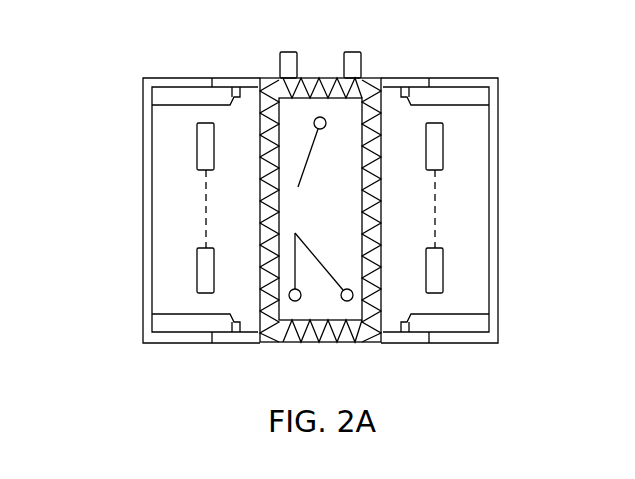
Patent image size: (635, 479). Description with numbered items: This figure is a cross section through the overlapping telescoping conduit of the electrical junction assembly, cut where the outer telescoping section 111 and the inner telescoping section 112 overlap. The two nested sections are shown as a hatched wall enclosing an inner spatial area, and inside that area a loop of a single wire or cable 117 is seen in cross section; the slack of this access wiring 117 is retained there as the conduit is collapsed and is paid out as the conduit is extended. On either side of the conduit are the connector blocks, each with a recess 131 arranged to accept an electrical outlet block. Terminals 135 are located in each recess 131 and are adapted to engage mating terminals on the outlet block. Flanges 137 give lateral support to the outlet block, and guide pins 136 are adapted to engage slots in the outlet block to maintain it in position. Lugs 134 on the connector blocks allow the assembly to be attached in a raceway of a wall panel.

The outer telescoping section 111 is at (440, 188).
The inner telescoping section 112 is at (201, 188).
The access wiring 117 is at (298, 187).
The recess 131 is at (185, 212).
The lug 134 is at (321, 46).
The terminal 135 is at (197, 155).
The guide pin 136 is at (152, 105).
The flange 137 is at (321, 212).